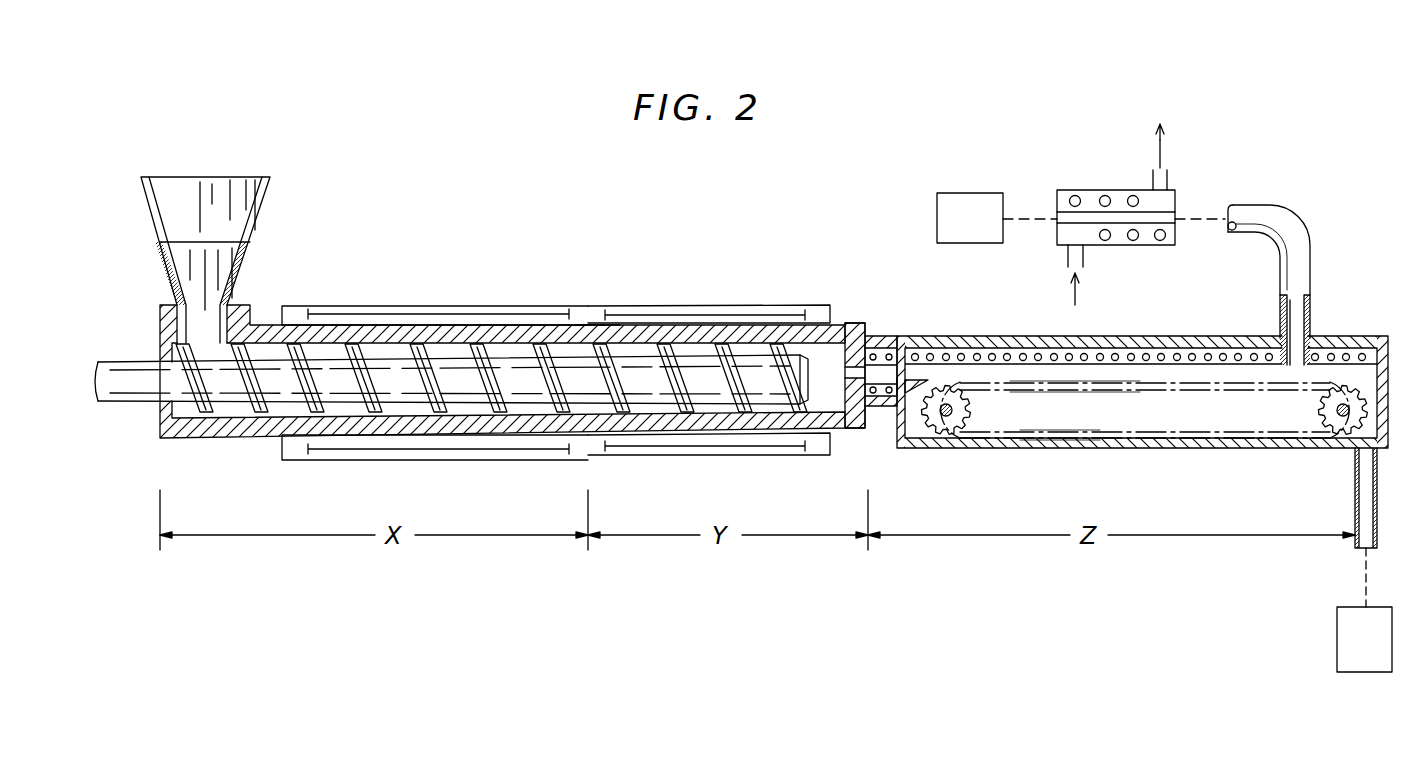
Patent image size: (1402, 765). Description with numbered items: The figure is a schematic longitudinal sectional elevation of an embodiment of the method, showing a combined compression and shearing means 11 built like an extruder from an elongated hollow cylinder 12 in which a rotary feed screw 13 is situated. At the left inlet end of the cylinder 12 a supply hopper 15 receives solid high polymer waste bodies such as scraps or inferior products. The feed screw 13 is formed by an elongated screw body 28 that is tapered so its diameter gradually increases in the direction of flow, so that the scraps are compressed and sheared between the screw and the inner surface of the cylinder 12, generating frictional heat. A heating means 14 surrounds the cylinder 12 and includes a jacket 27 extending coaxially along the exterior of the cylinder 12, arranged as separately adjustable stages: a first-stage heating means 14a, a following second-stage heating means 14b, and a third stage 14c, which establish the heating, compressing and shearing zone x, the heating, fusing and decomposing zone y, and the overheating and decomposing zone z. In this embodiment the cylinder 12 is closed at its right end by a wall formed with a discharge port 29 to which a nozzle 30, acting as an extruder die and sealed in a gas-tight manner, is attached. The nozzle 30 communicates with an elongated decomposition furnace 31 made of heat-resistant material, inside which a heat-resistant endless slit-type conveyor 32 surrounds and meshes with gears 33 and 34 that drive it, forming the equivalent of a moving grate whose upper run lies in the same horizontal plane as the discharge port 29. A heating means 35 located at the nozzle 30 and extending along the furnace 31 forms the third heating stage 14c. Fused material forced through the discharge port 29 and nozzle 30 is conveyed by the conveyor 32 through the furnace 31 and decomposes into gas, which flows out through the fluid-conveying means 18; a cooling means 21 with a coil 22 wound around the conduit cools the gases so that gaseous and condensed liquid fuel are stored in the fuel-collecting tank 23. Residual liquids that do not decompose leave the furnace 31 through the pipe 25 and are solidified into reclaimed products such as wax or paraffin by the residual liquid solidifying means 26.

The combined compression and shearing means 11 is at (578, 293).
The elongated hollow cylinder 12 is at (674, 325).
The rotary feed screw 13 is at (379, 364).
The heating means 14 is at (457, 311).
The first-stage heating means 14a is at (542, 306).
The second-stage heating means 14b is at (758, 305).
The third-stage heating means 14c is at (1134, 336).
The supply hopper 15 is at (264, 198).
The fluid-conveying means 18 is at (1309, 250).
The cooling means 21 is at (1094, 178).
The coil 22 is at (1136, 246).
The fuel-collecting tank 23 is at (982, 241).
The pipe 25 is at (1354, 509).
The residual liquid solidifying means 26 is at (1348, 625).
The jacket 27 is at (598, 307).
The elongated screw body 28 is at (313, 349).
The discharge port 29 is at (853, 326).
The nozzle 30 is at (888, 402).
The decomposition furnace 31 is at (1032, 341).
The endless slit-type conveyor 32 is at (1106, 437).
The gear 33 is at (950, 433).
The gear 34 is at (1340, 421).
The heating means 35 is at (874, 354).